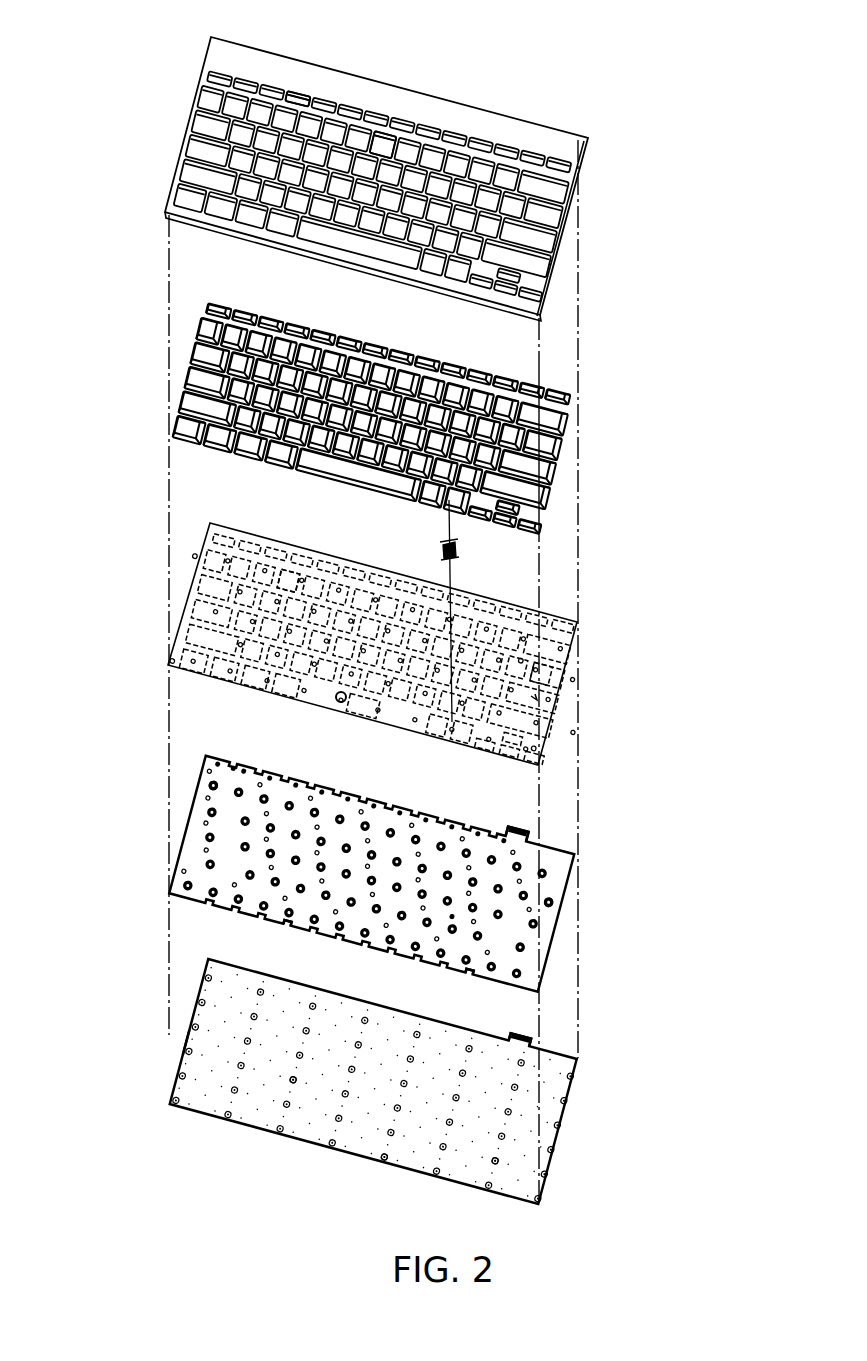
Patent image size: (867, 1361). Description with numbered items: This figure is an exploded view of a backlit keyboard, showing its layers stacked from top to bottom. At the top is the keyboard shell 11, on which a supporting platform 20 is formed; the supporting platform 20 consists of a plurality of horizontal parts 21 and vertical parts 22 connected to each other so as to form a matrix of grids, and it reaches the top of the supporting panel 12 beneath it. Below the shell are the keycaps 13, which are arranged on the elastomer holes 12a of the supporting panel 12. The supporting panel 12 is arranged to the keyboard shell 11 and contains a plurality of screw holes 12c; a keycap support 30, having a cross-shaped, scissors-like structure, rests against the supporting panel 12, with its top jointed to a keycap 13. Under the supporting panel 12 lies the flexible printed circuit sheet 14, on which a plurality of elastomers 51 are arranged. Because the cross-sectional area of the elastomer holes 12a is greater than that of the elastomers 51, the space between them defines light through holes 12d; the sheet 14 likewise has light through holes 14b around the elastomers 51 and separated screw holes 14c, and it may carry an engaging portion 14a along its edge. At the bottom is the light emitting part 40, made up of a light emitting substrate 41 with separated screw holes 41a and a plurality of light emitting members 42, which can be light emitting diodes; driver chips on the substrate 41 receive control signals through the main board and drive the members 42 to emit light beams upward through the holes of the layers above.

The keyboard shell 11 is at (411, 167).
The supporting panel 12 is at (578, 620).
The elastomer holes 12a is at (292, 545).
The screw holes 12c is at (192, 579).
The light through holes 12d is at (535, 700).
The keycaps 13 is at (567, 393).
The flexible printed circuit sheet 14 is at (578, 852).
The engaging tab 14a is at (527, 826).
The light through holes 14b is at (317, 893).
The screw holes 14c is at (366, 810).
The supporting platform 20 is at (383, 85).
The horizontal parts 21 is at (367, 146).
The vertical parts 22 is at (308, 88).
The keycap support 30 is at (458, 550).
The light emitting part 40 is at (374, 1087).
The light emitting substrate 41 is at (332, 1152).
The screw holes 41a is at (180, 1073).
The light emitting members 42 is at (545, 1108).
The elastomers 51 is at (238, 758).